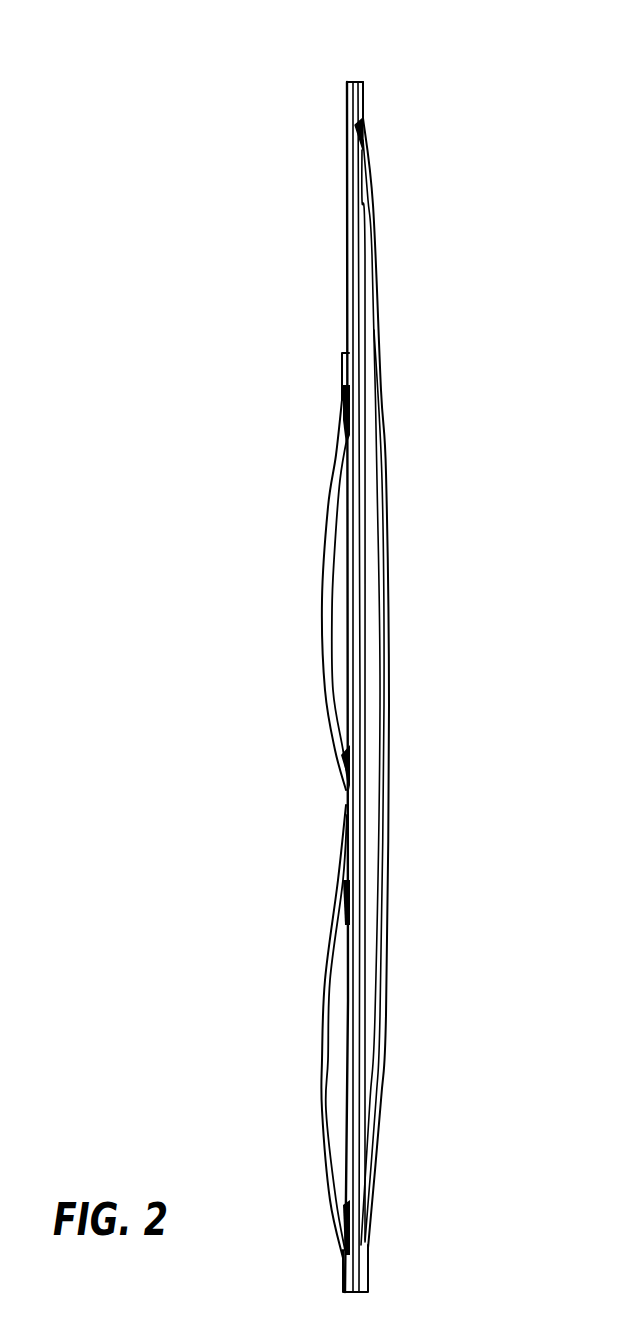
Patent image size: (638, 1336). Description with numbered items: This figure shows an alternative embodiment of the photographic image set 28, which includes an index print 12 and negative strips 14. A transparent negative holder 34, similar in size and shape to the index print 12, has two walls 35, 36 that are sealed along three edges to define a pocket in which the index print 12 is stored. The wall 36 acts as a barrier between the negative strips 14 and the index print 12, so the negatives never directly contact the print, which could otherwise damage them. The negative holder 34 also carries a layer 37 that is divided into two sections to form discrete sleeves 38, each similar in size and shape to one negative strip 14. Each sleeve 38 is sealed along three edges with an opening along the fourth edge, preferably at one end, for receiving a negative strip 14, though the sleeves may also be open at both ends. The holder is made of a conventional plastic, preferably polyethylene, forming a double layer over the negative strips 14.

The photographic image set 28 is at (228, 195).
The transparent negative holder 34 is at (350, 76).
The wall 36 is at (350, 318).
The negative strips 14 is at (345, 662).
The index print 12 is at (357, 153).
The wall 35 is at (386, 473).
The layer 37 is at (328, 507).
The sleeves 38 is at (322, 612).